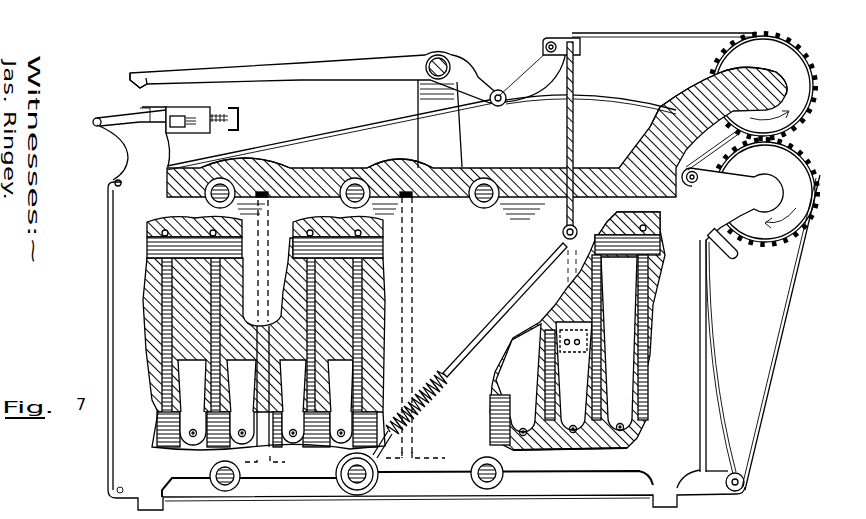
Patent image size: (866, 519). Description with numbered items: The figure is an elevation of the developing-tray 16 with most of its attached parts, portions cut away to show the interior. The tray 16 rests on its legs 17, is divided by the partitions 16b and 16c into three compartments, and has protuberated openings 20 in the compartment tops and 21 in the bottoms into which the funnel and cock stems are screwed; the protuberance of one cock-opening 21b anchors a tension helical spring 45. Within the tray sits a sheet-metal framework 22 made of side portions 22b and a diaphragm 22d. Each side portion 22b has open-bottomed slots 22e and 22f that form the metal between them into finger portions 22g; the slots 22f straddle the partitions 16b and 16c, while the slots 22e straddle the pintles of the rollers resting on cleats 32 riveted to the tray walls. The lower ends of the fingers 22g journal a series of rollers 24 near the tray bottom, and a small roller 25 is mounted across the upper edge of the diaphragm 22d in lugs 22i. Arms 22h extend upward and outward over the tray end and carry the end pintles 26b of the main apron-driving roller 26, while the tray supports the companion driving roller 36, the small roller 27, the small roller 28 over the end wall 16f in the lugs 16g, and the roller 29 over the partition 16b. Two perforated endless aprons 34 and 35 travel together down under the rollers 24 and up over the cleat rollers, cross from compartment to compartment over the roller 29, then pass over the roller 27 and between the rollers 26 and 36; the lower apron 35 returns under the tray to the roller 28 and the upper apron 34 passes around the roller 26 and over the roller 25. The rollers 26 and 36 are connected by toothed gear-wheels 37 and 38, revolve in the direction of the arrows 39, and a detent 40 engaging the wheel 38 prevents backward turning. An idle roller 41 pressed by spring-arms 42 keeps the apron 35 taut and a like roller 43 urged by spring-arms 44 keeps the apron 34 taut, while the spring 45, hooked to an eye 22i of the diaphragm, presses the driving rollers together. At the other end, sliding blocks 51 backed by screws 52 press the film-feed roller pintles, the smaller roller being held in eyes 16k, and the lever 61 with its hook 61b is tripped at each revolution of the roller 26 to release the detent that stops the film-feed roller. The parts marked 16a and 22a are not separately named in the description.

The developing-tray 16 is at (108, 212).
The lever arm 16a is at (730, 178).
The compartment-partition 16b is at (257, 337).
The compartment-partition 16c is at (150, 118).
The end wall 16f is at (113, 431).
The lug 16g is at (124, 152).
The eye 16k is at (95, 118).
The leg 17 is at (150, 491).
The protuberated opening 20 is at (221, 178).
The protuberated opening 21 is at (242, 484).
The cock-opening protuberance 21b is at (379, 482).
The sheet-metal framework 22 is at (613, 167).
The clamp cap 22a is at (213, 275).
The side portion 22b is at (333, 162).
The sheet-metal diaphragm 22d is at (576, 127).
The open-bottomed slot 22e is at (619, 367).
The open-bottomed slot 22f is at (263, 362).
The finger portion 22g is at (192, 308).
The arm 22h is at (663, 110).
The lug 22i is at (576, 50).
The roller 24 is at (160, 444).
The small roller 25 is at (544, 49).
The main apron-driving roller 26 is at (798, 88).
The end pintle 26b is at (790, 97).
The small roller 27 is at (692, 183).
The small roller 28 is at (114, 184).
The roller 29 is at (492, 181).
The cleat 32 is at (150, 248).
The endless apron 34 is at (333, 137).
The endless apron 35 is at (779, 357).
The main apron-driving roller 36 is at (806, 192).
The toothed gear-wheel 37 is at (813, 64).
The toothed gear-wheel 38 is at (816, 167).
The arrow 39 is at (789, 127).
The detent 40 is at (731, 256).
The idle roller 41 is at (727, 486).
The spring-arm 42 is at (720, 410).
The idle roller 43 is at (492, 106).
The spring-arm 44 is at (548, 98).
The tension helical spring 45 is at (541, 268).
The sliding block 51 is at (170, 128).
The screw 52 is at (240, 118).
The lever 61 is at (282, 68).
The hook 61b is at (140, 88).